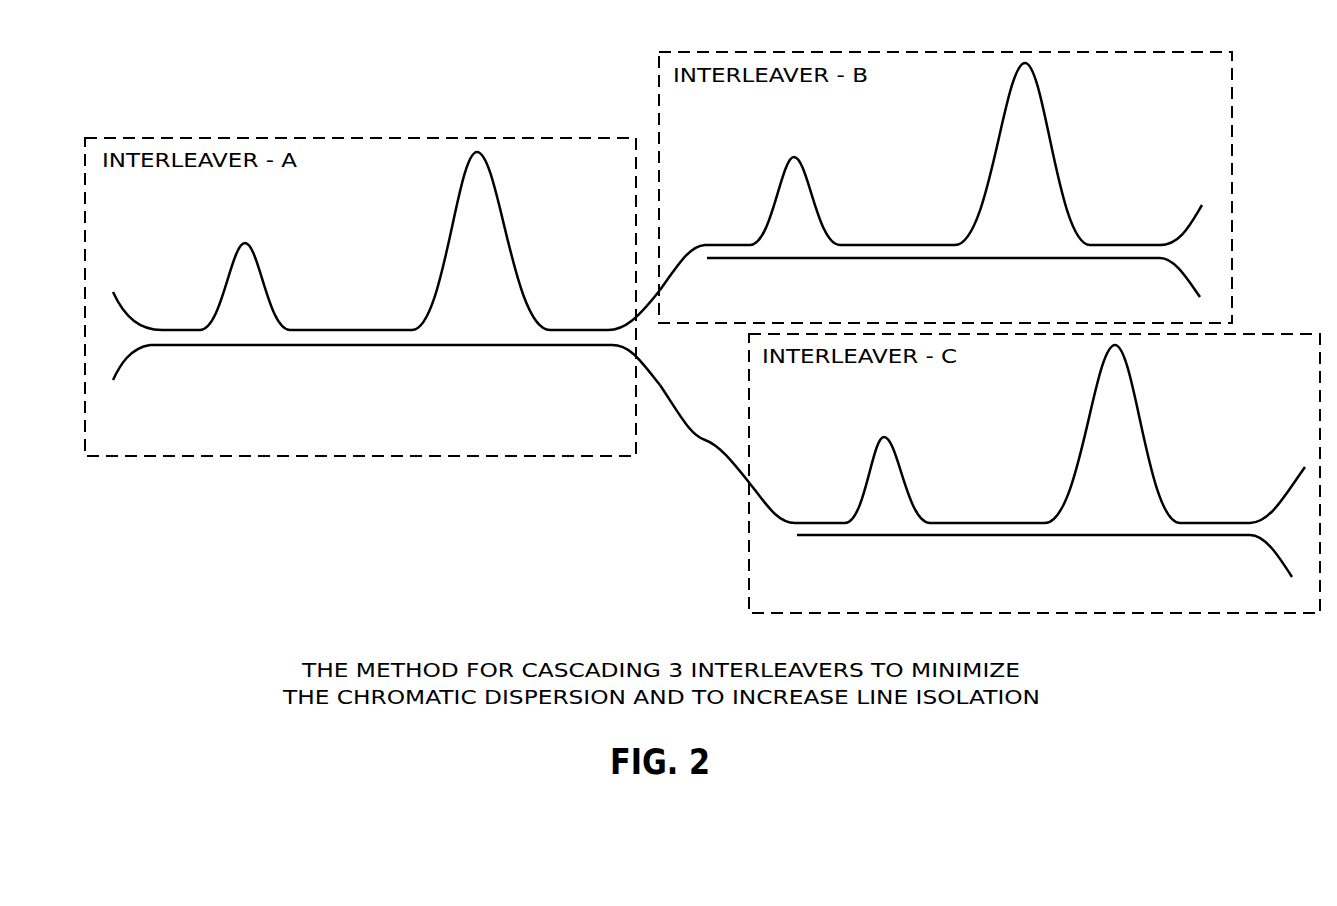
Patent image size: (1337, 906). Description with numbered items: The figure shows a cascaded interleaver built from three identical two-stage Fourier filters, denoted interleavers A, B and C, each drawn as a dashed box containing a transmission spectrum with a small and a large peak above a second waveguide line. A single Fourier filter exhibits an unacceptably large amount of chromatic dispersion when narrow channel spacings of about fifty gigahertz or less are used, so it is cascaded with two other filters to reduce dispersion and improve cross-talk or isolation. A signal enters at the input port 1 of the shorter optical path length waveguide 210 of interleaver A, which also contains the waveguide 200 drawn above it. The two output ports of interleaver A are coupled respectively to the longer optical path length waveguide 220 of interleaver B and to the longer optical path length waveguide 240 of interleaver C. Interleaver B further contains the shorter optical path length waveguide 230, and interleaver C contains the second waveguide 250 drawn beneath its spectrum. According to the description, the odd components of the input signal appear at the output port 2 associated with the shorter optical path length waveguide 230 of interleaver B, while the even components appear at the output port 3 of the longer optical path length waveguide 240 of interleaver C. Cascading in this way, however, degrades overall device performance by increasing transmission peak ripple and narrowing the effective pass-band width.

The input port of interleaver A 1 is at (162, 368).
The output port of interleaver B 2 is at (1188, 307).
The output port of interleaver C 3 is at (1289, 463).
The transmission spectrum of interleaver A 200 is at (505, 200).
The shorter optical path length waveguide of interleaver A 210 is at (382, 346).
The longer optical path length waveguide of interleaver B 220 is at (895, 244).
The shorter optical path length waveguide of interleaver B 230 is at (927, 260).
The longer optical path length waveguide of interleaver C 240 is at (985, 522).
The baseline / dispersion line of interleaver C 250 is at (1017, 540).